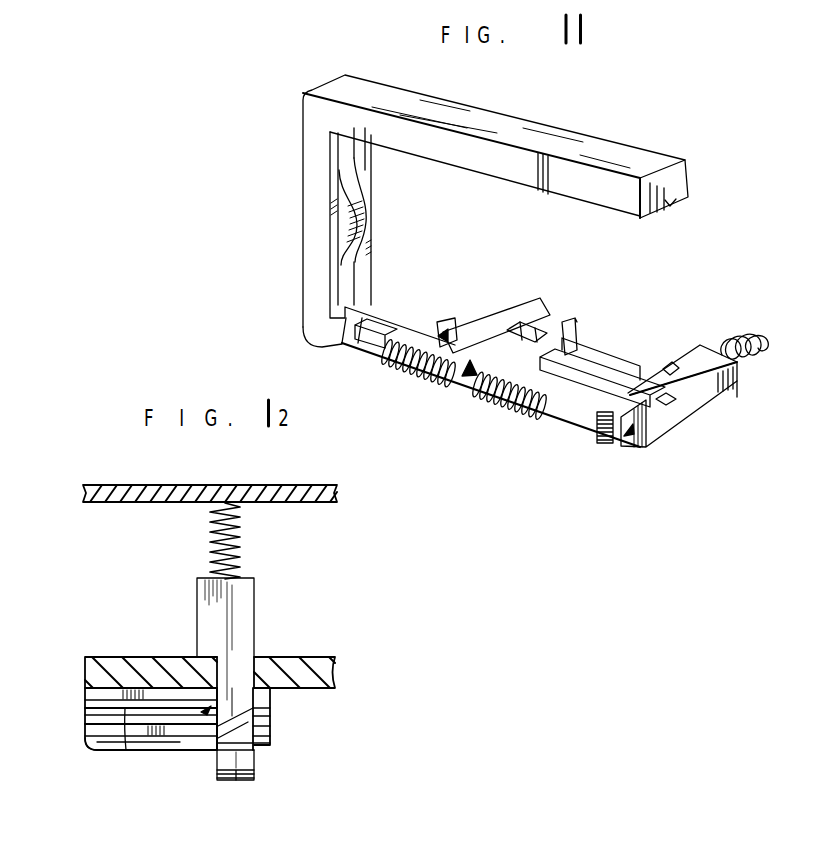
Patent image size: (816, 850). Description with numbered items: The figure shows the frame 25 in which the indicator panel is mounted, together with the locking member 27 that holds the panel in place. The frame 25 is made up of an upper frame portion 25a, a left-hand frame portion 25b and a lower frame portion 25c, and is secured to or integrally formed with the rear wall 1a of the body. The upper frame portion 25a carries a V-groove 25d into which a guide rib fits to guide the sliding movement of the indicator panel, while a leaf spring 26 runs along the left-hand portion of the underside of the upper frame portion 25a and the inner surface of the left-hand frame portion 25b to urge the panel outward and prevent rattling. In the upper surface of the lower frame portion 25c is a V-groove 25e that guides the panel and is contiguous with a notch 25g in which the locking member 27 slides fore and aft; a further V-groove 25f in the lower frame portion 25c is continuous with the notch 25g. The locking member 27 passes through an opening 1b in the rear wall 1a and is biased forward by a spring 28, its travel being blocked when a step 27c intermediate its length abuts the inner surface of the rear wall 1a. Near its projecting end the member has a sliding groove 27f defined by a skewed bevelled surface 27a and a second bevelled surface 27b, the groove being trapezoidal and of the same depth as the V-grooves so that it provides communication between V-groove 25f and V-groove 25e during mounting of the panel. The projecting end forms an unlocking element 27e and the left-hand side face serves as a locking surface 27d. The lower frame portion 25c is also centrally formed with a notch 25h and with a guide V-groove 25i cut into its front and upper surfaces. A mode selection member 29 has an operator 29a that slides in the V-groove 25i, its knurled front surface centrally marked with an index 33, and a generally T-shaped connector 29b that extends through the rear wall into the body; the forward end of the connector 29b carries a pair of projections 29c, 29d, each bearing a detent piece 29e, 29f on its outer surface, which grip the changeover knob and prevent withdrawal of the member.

In FIG. 12, the rear wall 1a is at (330, 664).
In FIG. 12, the opening 1b is at (255, 660).
In FIG. 11, the frame 25 is at (561, 105).
In FIG. 11, the upper frame portion 25a is at (578, 140).
In FIG. 11, the left-hand frame portion 25b is at (312, 186).
In FIG. 11, the lower frame portion 25c is at (388, 313).
In FIG. 12, the lower frame portion 25c is at (90, 724).
In FIG. 11, the V-groove 25d is at (672, 204).
In FIG. 11, the V-groove 25e is at (678, 408).
In FIG. 12, the V-groove 25e is at (266, 706).
In FIG. 11, the V-groove 25f is at (576, 365).
In FIG. 12, the V-groove 25f is at (127, 740).
In FIG. 11, the notch 25g is at (627, 438).
In FIG. 12, the notch 25g is at (222, 748).
In FIG. 11, the notch 25h is at (438, 327).
In FIG. 11, the V-groove 25i is at (353, 343).
In FIG. 12, the V-groove 25i is at (96, 752).
In FIG. 11, the leaf spring 26 is at (352, 182).
In FIG. 11, the locking member 27 is at (700, 393).
In FIG. 12, the locking member 27 is at (250, 607).
In FIG. 12, the skewed bevelled surface 27a is at (258, 720).
In FIG. 12, the bevelled surface 27b is at (263, 748).
In FIG. 11, the step 27c is at (667, 368).
In FIG. 12, the step 27c is at (206, 656).
In FIG. 12, the locking surface 27d is at (205, 710).
In FIG. 11, the unlocking element 27e is at (603, 432).
In FIG. 12, the unlocking element 27e is at (240, 780).
In FIG. 11, the sliding groove 27f is at (665, 402).
In FIG. 12, the sliding groove 27f is at (266, 738).
In FIG. 11, the spring 28 is at (736, 342).
In FIG. 12, the spring 28 is at (240, 536).
In FIG. 11, the mode selection member 29 is at (482, 378).
In FIG. 11, the operator 29a is at (376, 348).
In FIG. 11, the connector 29b is at (473, 345).
In FIG. 11, the projection 29c is at (534, 333).
In FIG. 11, the projection 29d is at (562, 330).
In FIG. 11, the detent piece 29e is at (512, 320).
In FIG. 11, the detent piece 29f is at (574, 338).
In FIG. 11, the index 33 is at (464, 376).